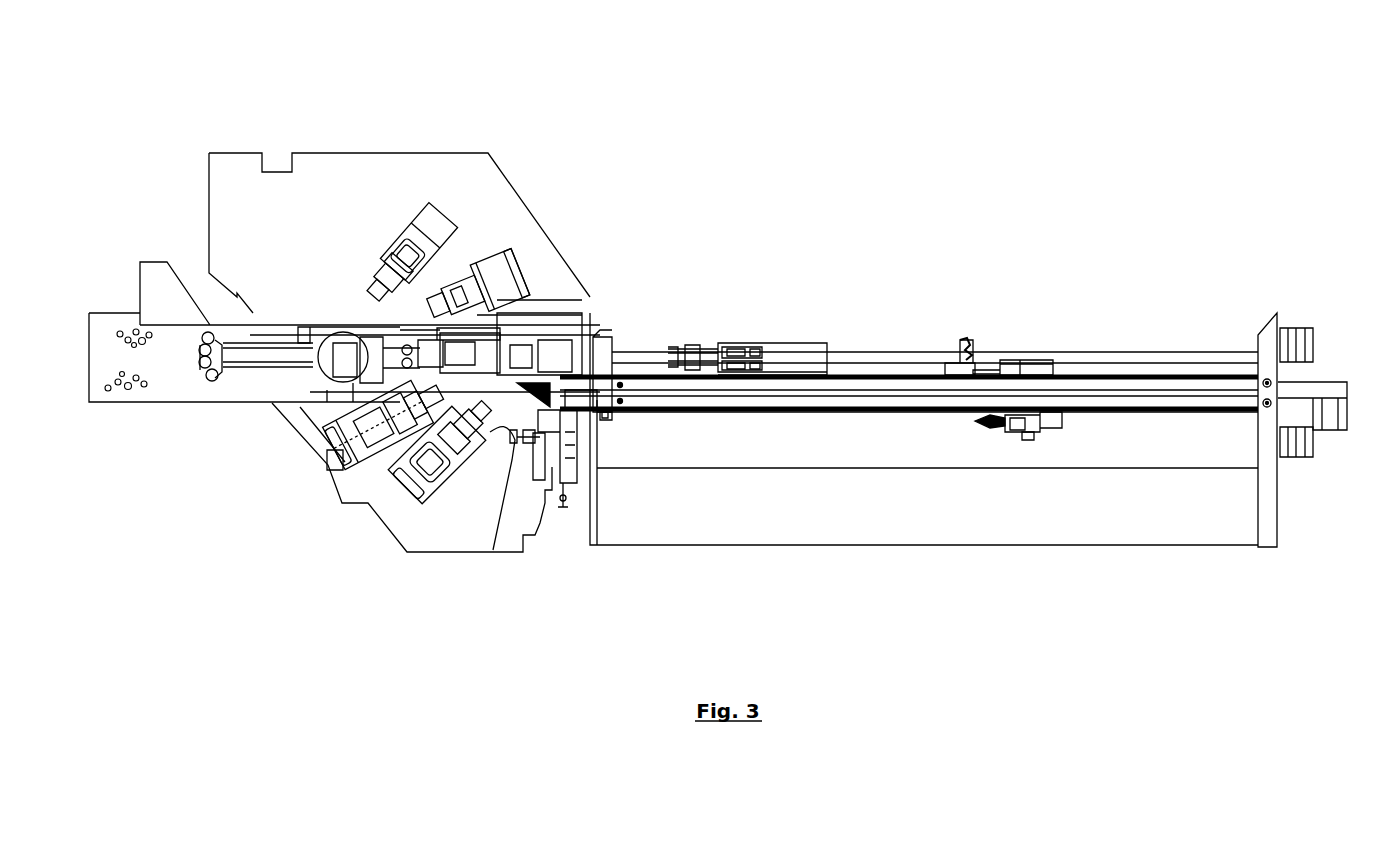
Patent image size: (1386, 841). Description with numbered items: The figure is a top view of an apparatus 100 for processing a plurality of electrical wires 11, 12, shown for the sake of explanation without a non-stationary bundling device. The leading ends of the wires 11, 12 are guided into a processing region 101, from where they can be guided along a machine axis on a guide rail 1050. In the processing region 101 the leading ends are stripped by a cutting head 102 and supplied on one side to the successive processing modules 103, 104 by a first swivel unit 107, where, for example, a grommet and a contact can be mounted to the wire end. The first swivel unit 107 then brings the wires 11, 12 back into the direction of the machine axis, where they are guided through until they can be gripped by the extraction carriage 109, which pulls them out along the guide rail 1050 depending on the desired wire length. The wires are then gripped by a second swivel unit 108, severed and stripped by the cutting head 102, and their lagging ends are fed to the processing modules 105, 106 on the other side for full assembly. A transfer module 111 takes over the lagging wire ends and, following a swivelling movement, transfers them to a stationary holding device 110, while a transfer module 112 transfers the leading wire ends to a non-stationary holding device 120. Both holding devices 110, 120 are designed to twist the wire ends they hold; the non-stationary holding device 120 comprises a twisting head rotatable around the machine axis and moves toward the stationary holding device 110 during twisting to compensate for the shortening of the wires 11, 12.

The apparatus 100 is at (958, 633).
The processing region 101 is at (535, 275).
The cutting head 102 is at (425, 345).
The processing module 103 is at (437, 220).
The processing module 104 is at (510, 255).
The processing module 105 is at (353, 452).
The processing module 106 is at (402, 483).
The first swivel unit 107 is at (403, 333).
The second swivel unit 108 is at (480, 368).
The extraction carriage 109 is at (790, 350).
The stationary holding device 110 is at (557, 490).
The transfer module 111 is at (520, 462).
The transfer module 112 is at (1040, 363).
The non-stationary holding device 120 is at (1030, 428).
The guide rail 1050 is at (1168, 387).
The electrical wire 11 is at (247, 348).
The electrical wire 12 is at (253, 352).